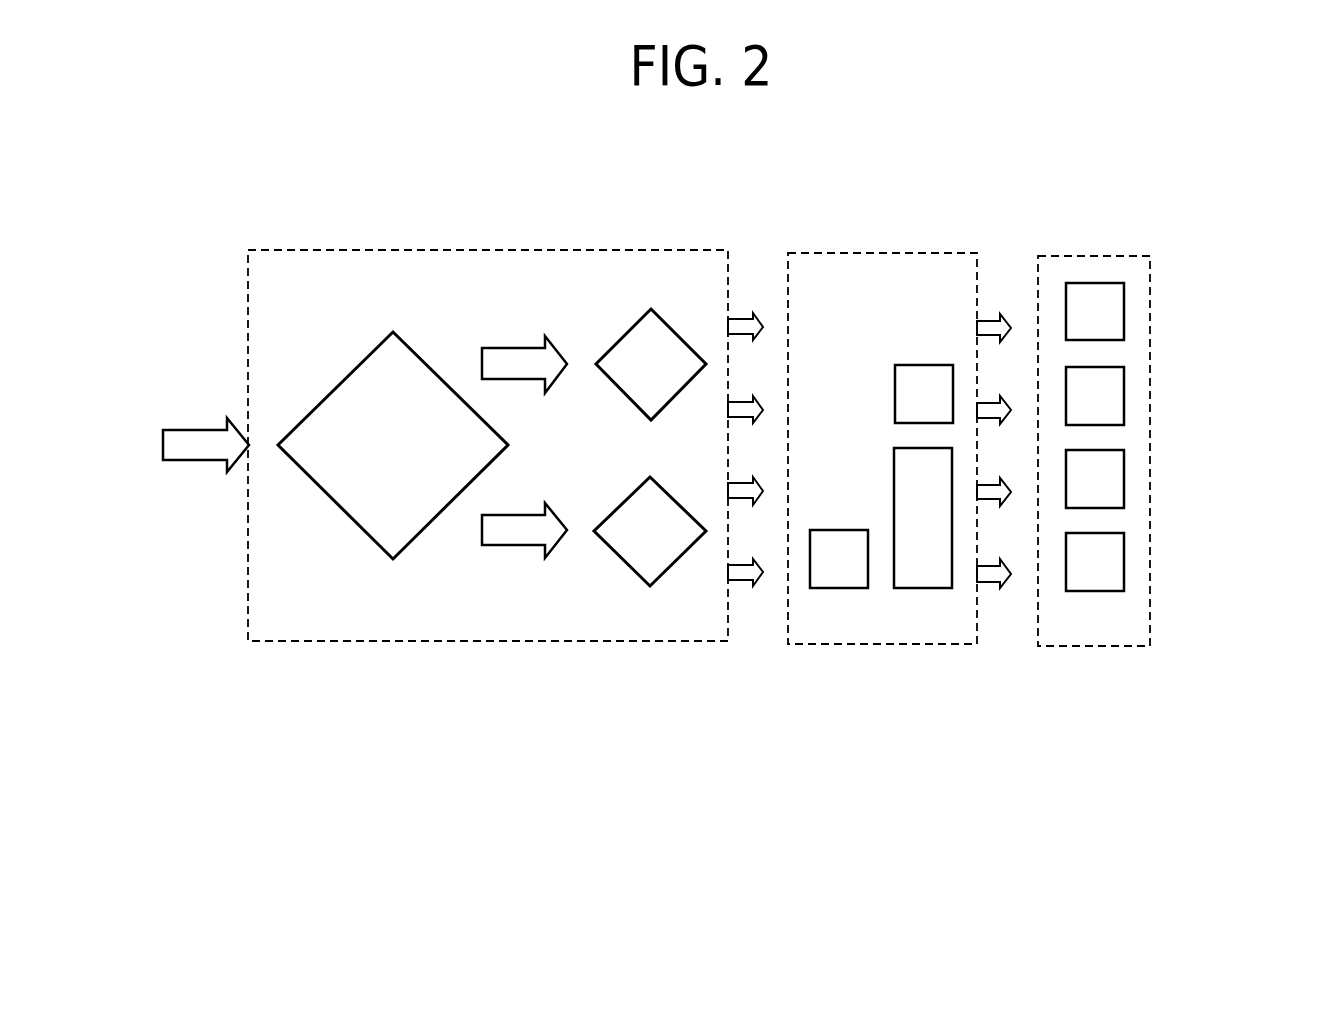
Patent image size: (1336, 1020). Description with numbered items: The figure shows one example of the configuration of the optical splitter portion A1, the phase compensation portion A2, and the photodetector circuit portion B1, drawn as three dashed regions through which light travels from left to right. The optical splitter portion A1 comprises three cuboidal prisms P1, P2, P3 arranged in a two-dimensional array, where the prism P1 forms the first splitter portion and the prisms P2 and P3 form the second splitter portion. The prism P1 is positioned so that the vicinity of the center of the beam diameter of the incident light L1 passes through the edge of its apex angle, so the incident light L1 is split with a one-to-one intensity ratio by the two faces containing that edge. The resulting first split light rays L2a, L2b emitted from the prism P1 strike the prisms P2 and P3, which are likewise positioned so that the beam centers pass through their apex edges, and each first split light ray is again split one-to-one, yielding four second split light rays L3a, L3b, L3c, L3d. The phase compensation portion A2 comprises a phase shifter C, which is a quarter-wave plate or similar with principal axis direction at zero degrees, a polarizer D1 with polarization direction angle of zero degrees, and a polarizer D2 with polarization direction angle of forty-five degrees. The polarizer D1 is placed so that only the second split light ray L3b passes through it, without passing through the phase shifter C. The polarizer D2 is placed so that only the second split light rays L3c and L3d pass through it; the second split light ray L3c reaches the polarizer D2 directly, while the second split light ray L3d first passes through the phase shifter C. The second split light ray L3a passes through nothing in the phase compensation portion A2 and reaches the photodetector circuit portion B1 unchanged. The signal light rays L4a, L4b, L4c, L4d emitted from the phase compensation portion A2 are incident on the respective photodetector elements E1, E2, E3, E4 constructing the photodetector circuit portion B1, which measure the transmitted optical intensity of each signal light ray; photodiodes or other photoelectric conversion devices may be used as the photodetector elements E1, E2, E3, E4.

The optical splitter portion A1 is at (247, 641).
The phase compensation portion A2 is at (958, 646).
The photodetector circuit portion B1 is at (1150, 615).
The incident light L1 is at (197, 430).
The prism P1 is at (332, 392).
The first split light ray L2a is at (520, 348).
The first split light ray L2b is at (515, 545).
The prism P2 is at (651, 309).
The prism P3 is at (650, 586).
The second split light ray L3a is at (745, 319).
The second split light ray L3b is at (741, 402).
The second split light ray L3c is at (740, 499).
The second split light ray L3d is at (740, 581).
The polarizer D1 is at (925, 365).
The polarizer D2 is at (922, 588).
The phase shifter C is at (840, 588).
The signal light ray L4a is at (992, 321).
The signal light ray L4b is at (992, 403).
The signal light ray L4c is at (988, 500).
The signal light ray L4d is at (988, 583).
The photodetector element E1 is at (1124, 310).
The photodetector element E2 is at (1124, 394).
The photodetector element E3 is at (1124, 477).
The photodetector element E4 is at (1124, 560).